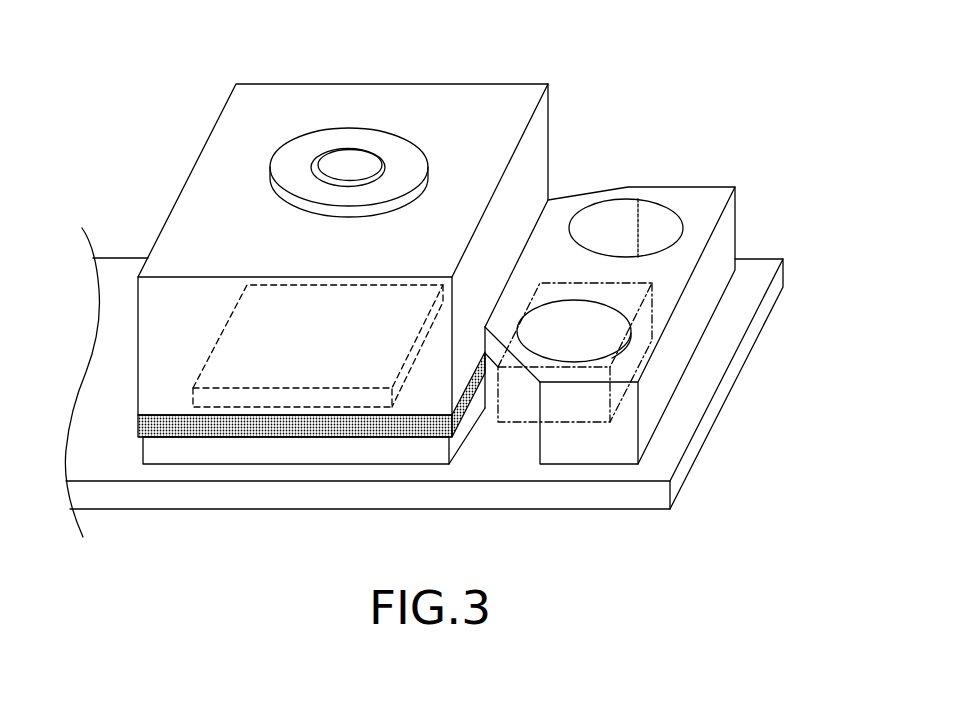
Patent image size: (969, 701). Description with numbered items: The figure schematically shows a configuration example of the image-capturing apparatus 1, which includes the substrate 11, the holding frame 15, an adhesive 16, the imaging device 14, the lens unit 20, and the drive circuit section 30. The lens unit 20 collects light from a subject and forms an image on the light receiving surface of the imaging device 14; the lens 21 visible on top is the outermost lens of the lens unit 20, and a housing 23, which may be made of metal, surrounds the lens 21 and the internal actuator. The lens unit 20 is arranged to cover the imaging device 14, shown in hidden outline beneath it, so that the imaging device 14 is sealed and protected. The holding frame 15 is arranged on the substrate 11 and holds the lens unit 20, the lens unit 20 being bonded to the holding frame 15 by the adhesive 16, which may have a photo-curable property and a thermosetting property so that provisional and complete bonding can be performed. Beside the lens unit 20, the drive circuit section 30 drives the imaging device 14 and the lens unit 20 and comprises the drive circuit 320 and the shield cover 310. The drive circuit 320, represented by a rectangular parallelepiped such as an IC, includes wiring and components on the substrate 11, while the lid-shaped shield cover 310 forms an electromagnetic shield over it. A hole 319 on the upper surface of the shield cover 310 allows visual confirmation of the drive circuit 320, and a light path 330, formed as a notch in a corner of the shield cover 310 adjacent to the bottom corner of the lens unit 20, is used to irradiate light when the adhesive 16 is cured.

The image-capturing apparatus 1 is at (731, 64).
The substrate 11 is at (767, 259).
The imaging device 14 is at (218, 340).
The holding frame 15 is at (144, 452).
The adhesive 16 is at (140, 425).
The lens unit 20 is at (521, 67).
The lens 21 is at (353, 155).
The housing 23 is at (310, 84).
The drive circuit section 30 is at (731, 173).
The shield cover 310 is at (662, 186).
The hole 319 is at (617, 220).
The drive circuit 320 is at (656, 302).
The light path 330 is at (512, 443).